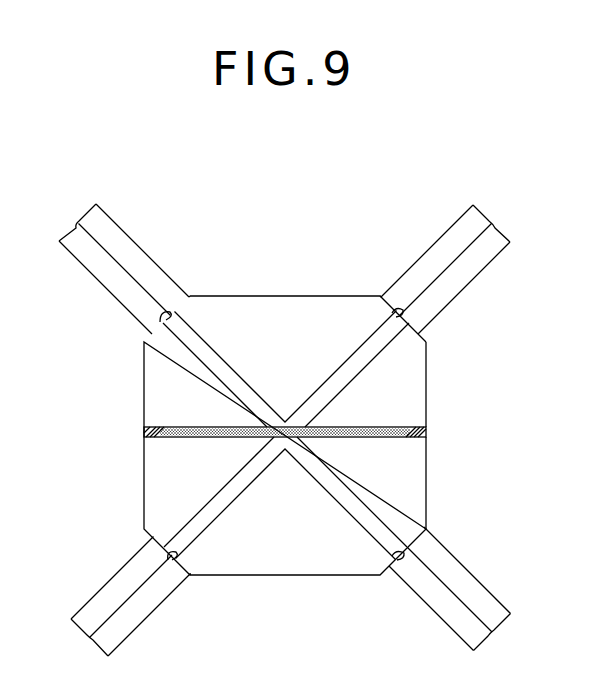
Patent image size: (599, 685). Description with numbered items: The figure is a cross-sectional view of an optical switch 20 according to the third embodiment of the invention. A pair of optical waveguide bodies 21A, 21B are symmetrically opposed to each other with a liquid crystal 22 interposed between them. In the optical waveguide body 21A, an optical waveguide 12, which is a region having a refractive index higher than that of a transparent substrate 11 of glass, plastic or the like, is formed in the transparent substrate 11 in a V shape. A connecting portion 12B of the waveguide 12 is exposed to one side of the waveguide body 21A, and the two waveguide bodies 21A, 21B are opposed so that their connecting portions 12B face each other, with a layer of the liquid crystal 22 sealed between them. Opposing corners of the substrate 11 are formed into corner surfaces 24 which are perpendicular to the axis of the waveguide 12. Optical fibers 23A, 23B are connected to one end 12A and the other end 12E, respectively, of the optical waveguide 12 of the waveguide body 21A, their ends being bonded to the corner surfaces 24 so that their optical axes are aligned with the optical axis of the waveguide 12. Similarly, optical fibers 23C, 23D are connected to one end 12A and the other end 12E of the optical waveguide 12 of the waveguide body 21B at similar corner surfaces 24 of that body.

The transparent substrate 11 is at (154, 456).
The optical waveguide 12 is at (207, 350).
The one end of the optical waveguide 12A is at (162, 324).
The connecting portion 12B is at (268, 425).
The other end of the optical waveguide 12E is at (392, 313).
The optical switch 20 is at (448, 388).
The optical waveguide body 21A is at (428, 347).
The optical waveguide body 21B is at (430, 463).
The liquid crystal 22 is at (375, 438).
The optical fiber 23A is at (142, 251).
The optical fiber 23B is at (439, 240).
The optical fiber 23C is at (119, 571).
The optical fiber 23D is at (464, 567).
The corner surface 24 is at (150, 332).